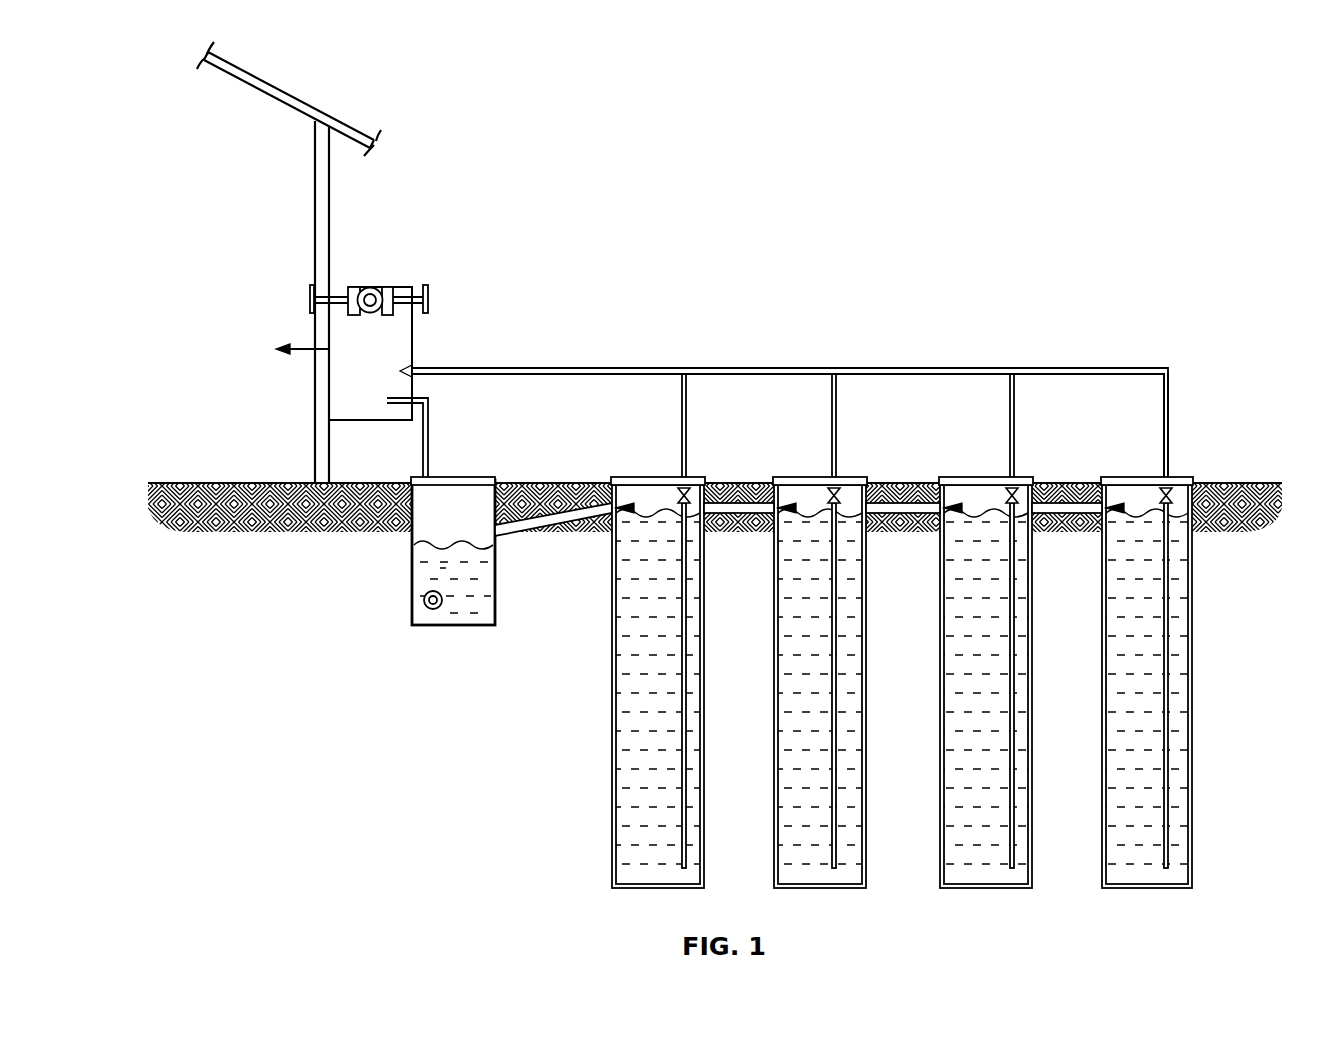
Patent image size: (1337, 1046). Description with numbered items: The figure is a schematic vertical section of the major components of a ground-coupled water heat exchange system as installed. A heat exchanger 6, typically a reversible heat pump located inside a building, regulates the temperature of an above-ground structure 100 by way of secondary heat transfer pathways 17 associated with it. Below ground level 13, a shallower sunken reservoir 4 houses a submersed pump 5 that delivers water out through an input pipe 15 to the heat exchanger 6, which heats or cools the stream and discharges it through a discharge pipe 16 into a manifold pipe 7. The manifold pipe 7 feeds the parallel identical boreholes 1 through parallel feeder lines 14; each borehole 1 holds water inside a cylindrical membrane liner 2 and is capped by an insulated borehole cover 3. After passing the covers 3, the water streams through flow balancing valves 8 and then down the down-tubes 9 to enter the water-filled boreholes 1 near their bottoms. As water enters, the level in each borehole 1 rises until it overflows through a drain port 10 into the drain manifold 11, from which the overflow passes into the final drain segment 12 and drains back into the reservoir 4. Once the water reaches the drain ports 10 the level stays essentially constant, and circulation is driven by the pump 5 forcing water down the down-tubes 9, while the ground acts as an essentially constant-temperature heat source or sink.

The borehole 1 is at (690, 875).
The cylindrical membrane liner 2 is at (772, 787).
The insulated borehole cover 3 is at (490, 478).
The reservoir 4 is at (497, 599).
The submersed pump 5 is at (424, 600).
The heat exchanger 6 is at (334, 401).
The manifold pipe 7 is at (601, 368).
The flow balancing valve 8 is at (685, 507).
The down-tube 9 is at (686, 678).
The drain port 10 is at (629, 514).
The drain manifold 11 is at (765, 509).
The final drain segment 12 is at (600, 521).
The ground 13 is at (214, 483).
The feeder line 14 is at (681, 411).
The input pipe 15 is at (432, 454).
The discharge pipe 16 is at (452, 368).
The secondary heat transfer pathway 17 is at (298, 350).
The above-ground structure 100 is at (331, 242).